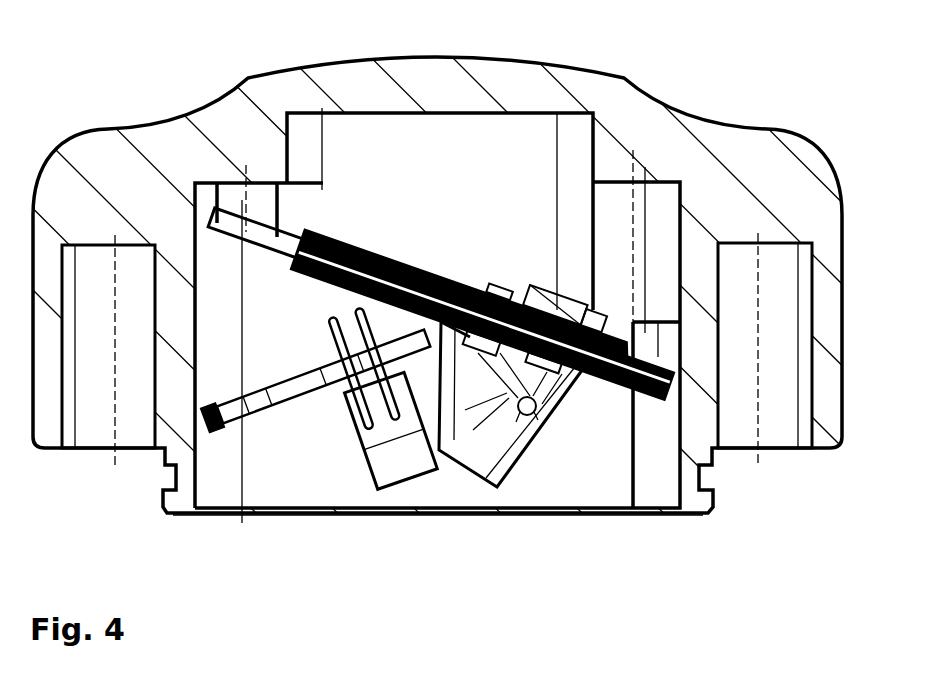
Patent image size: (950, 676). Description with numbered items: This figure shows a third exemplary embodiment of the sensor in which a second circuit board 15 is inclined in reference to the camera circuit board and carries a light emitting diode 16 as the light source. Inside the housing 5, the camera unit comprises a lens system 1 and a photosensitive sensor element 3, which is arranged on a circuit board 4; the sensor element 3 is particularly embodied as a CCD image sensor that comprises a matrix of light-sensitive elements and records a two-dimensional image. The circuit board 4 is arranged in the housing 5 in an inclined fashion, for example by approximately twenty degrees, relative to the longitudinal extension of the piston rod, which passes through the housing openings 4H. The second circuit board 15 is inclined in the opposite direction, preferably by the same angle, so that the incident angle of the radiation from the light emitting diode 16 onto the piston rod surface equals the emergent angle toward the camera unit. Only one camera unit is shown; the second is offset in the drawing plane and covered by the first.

The housing 5 is at (268, 97).
The bore hole for rod 4H is at (262, 203).
The circuit board 4 is at (398, 263).
The sensor element 3 is at (522, 364).
The lens system 1 is at (497, 458).
The light emitting diode 16 is at (397, 450).
The second circuit board 15 is at (285, 393).